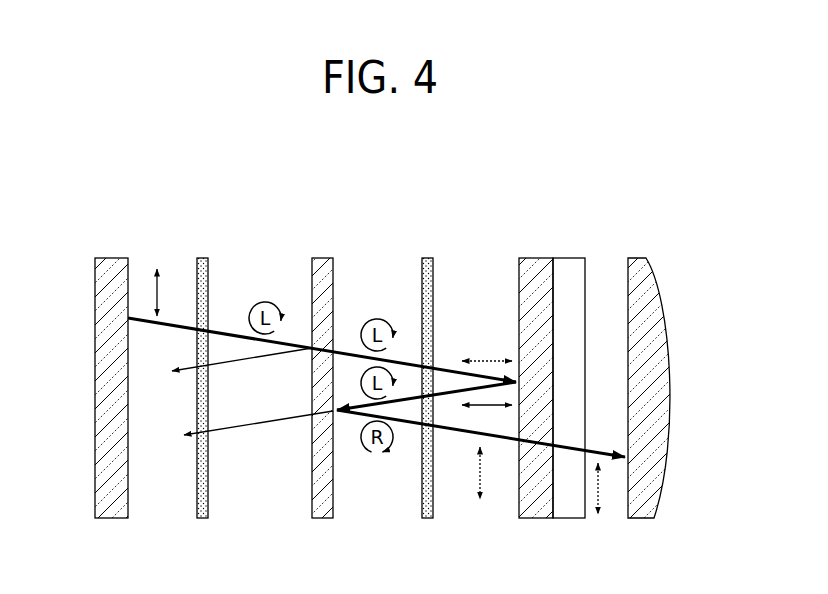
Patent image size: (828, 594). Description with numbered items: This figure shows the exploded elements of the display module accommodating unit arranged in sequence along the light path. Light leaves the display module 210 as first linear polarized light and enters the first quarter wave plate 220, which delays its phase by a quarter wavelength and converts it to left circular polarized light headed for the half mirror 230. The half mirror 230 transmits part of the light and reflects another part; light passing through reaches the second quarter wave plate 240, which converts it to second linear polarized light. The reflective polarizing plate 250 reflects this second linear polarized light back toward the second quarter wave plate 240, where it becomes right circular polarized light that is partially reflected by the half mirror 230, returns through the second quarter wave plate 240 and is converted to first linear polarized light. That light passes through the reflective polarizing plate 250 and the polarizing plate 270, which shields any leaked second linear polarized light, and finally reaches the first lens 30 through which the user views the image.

The display module 210 is at (112, 275).
The first quarter wave plate 220 is at (204, 270).
The half mirror 230 is at (322, 272).
The second quarter wave plate 240 is at (430, 270).
The reflective polarizing plate 250 is at (529, 275).
The polarizing plate 270 is at (572, 275).
The first lens 30 is at (637, 273).